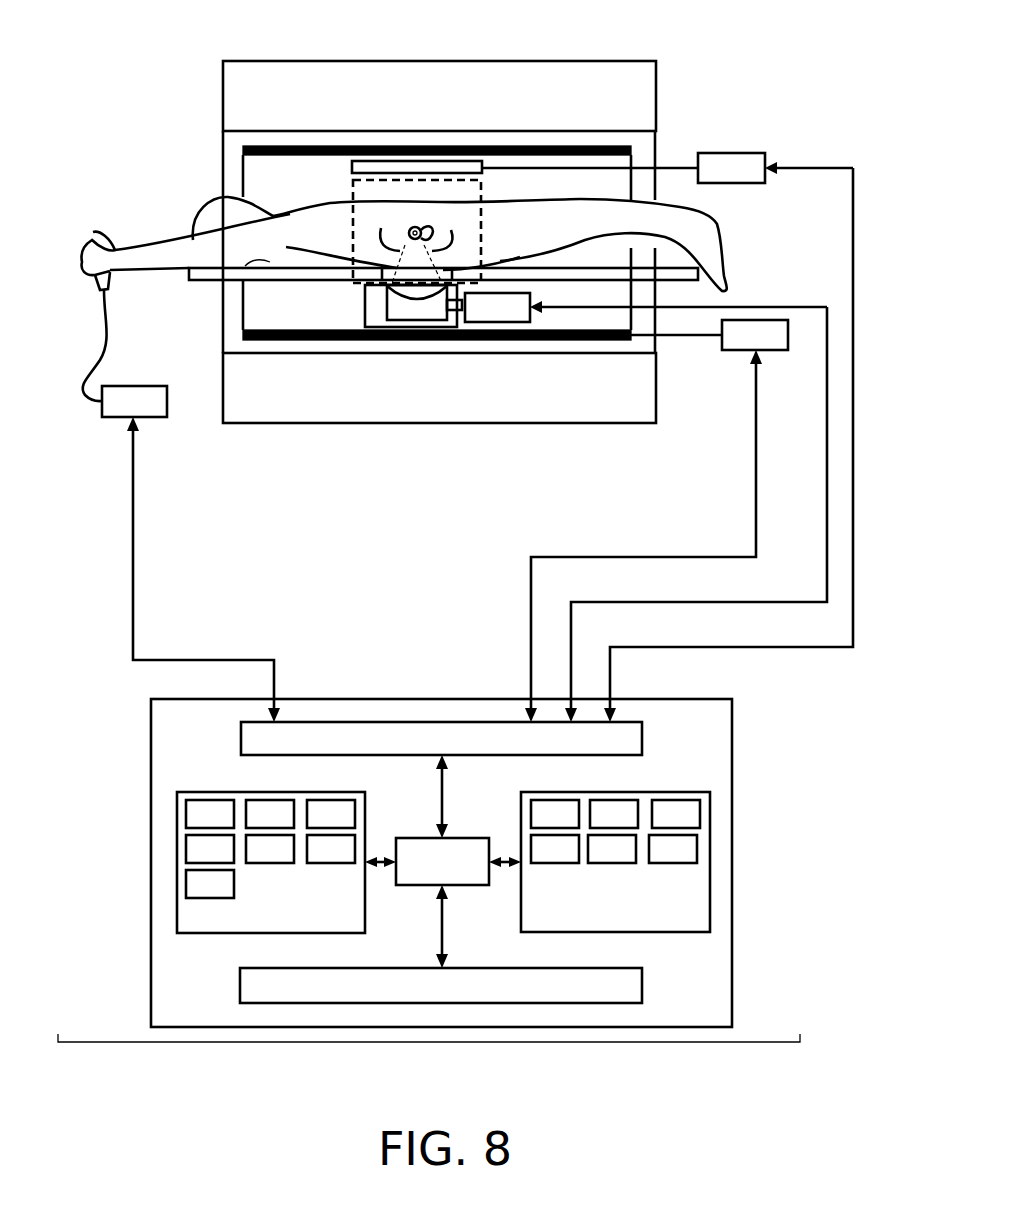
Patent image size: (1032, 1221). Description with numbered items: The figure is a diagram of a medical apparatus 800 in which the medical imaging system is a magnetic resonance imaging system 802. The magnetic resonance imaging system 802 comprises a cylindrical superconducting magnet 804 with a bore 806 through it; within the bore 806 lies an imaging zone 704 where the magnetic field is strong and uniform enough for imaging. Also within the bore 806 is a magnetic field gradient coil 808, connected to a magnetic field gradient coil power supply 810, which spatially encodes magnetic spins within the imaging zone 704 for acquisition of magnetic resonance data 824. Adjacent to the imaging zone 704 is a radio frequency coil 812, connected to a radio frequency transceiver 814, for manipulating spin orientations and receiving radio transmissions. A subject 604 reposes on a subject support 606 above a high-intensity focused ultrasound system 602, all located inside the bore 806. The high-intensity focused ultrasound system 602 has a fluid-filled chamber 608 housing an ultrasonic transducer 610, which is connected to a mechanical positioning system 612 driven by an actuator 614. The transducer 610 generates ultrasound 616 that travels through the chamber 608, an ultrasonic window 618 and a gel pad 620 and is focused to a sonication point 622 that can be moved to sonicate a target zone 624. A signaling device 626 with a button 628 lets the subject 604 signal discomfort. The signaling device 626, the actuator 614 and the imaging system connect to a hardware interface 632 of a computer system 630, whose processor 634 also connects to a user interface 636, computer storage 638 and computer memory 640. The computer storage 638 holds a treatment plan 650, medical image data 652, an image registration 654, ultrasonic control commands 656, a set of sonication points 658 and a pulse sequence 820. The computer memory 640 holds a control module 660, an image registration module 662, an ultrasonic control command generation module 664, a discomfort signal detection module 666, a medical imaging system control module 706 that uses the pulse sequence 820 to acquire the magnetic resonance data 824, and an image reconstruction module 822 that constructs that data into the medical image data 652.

The medical apparatus 800 is at (429, 1056).
The magnetic resonance imaging system 802 is at (694, 50).
The magnet 804 is at (657, 98).
The bore 806 is at (668, 199).
The magnetic field gradient coil 808 is at (288, 343).
The magnetic field gradient coil power supply 810 is at (709, 335).
The radio frequency coil 812 is at (378, 170).
The radio frequency transceiver 814 is at (623, 168).
The high-intensity focused ultrasound system 602 is at (341, 308).
The subject 604 is at (722, 251).
The subject support 606 is at (203, 281).
The fluid-filled chamber 608 is at (375, 324).
The ultrasonic transducer 610 is at (415, 321).
The mechanical positioning system 612 is at (457, 312).
The actuator 614 is at (497, 307).
The ultrasound 616 is at (419, 228).
The ultrasonic window 618 is at (353, 240).
The gel pad 620 is at (481, 258).
The sonication point 622 is at (416, 227).
The target zone 624 is at (433, 229).
The signaling device 626 is at (134, 401).
The button 628 is at (90, 240).
The computer system 630 is at (732, 750).
The hardware interface 632 is at (441, 738).
The processor 634 is at (442, 861).
The user interface 636 is at (441, 985).
The computer storage 638 is at (177, 861).
The computer memory 640 is at (710, 860).
The treatment plan 650 is at (210, 814).
The medical image data 652 is at (270, 814).
The image registration 654 is at (331, 814).
The ultrasonic control commands 656 is at (210, 849).
The set of sonication points 658 is at (270, 849).
The control module 660 is at (555, 814).
The image registration module 662 is at (614, 814).
The ultrasonic control command generation module 664 is at (676, 814).
The discomfort signal detection module 666 is at (555, 849).
The imaging zone 704 is at (353, 190).
The medical imaging system control module 706 is at (612, 849).
The pulse sequence 820 is at (331, 849).
The image reconstruction module 822 is at (673, 849).
The magnetic resonance data 824 is at (210, 884).